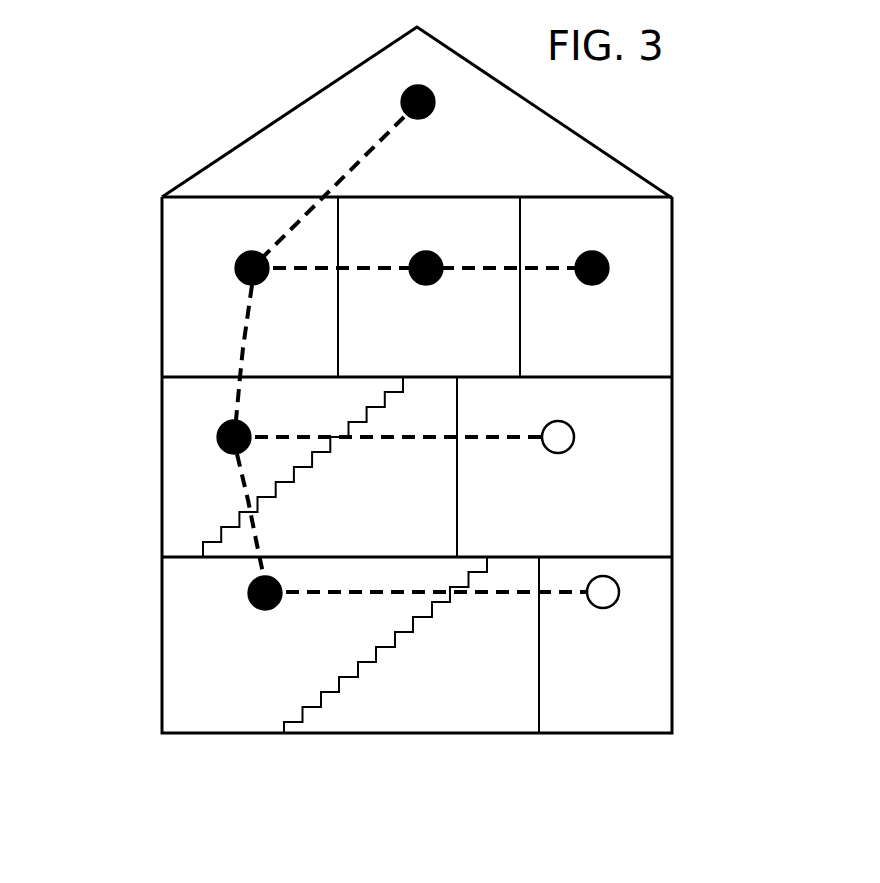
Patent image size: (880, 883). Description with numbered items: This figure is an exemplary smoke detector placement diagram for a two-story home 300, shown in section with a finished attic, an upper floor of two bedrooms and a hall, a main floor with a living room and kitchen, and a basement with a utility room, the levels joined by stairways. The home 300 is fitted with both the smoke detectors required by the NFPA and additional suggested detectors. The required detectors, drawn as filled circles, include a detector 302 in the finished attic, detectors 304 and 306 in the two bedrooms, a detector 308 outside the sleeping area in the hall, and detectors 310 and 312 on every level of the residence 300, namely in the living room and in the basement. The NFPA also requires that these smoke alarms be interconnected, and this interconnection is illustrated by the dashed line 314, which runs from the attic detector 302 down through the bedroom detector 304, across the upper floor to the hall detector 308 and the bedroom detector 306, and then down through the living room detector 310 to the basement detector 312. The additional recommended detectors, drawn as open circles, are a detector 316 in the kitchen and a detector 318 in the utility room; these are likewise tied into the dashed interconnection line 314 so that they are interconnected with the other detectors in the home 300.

The two-story home 300 is at (104, 114).
The smoke detector 302 is at (405, 90).
The smoke detector 304 is at (235, 268).
The smoke detector 306 is at (609, 268).
The smoke detector 308 is at (417, 256).
The smoke detector 310 is at (217, 437).
The smoke detector 312 is at (248, 593).
The dashed line 314 is at (243, 347).
The smoke detector 316 is at (575, 437).
The smoke detector 318 is at (620, 592).